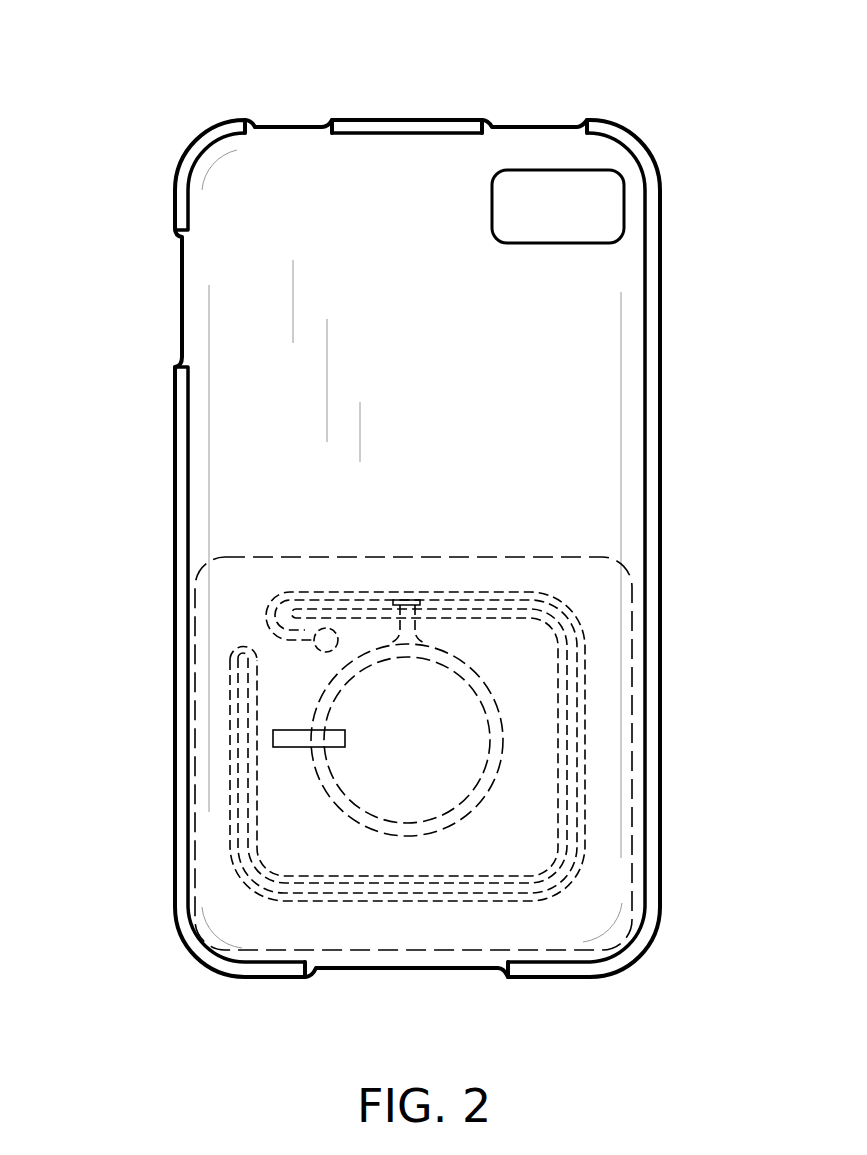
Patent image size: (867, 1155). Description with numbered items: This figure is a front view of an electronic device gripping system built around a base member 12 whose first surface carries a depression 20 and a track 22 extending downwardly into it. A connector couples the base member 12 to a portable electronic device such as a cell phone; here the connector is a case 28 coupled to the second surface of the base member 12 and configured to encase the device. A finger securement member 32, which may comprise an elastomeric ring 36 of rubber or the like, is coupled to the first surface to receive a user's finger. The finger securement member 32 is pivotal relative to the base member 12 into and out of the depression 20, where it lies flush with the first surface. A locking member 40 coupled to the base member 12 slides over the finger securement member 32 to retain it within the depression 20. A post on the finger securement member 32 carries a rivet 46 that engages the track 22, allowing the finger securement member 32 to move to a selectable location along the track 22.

The base member 12 is at (548, 560).
The depression 20 is at (497, 698).
The track 22 is at (285, 903).
The case 28 is at (293, 125).
The finger securement member 32 is at (505, 733).
The ring 36 is at (497, 775).
The locking member 40 is at (287, 748).
The rivet 46 is at (412, 603).